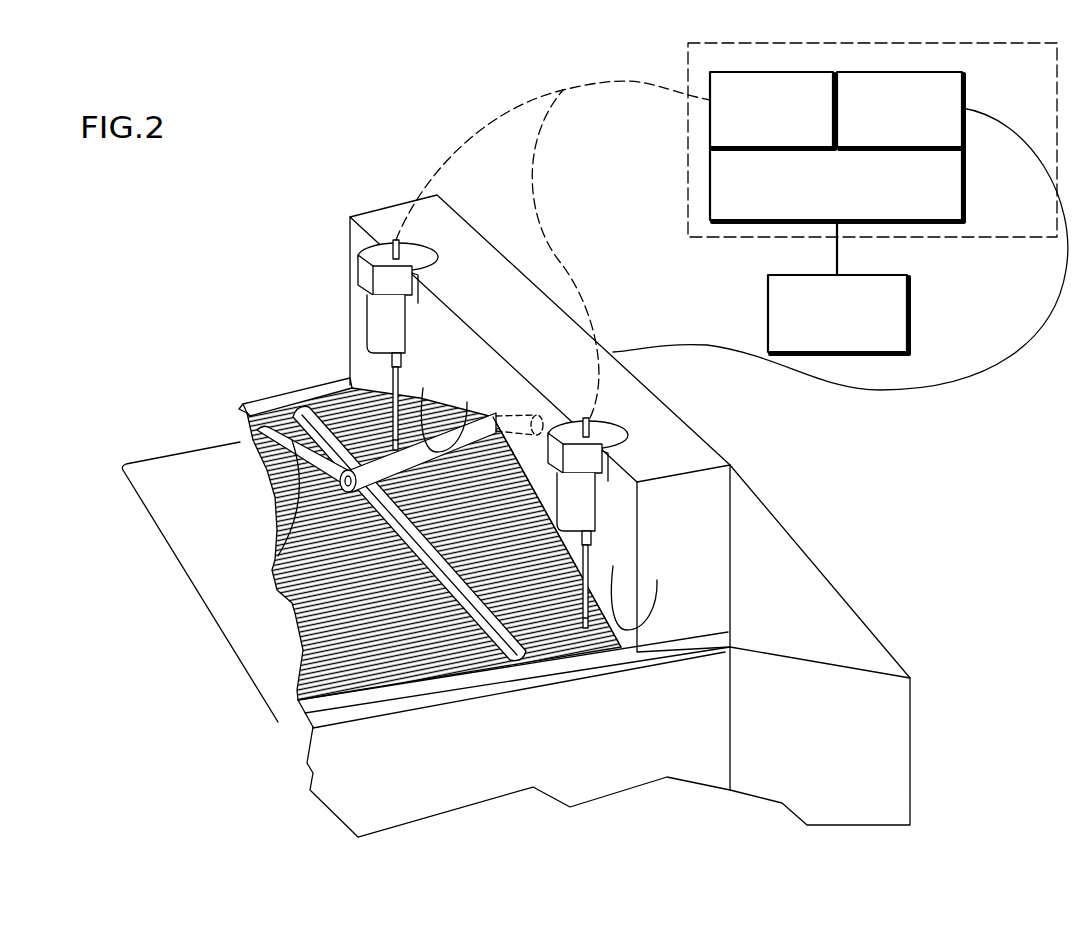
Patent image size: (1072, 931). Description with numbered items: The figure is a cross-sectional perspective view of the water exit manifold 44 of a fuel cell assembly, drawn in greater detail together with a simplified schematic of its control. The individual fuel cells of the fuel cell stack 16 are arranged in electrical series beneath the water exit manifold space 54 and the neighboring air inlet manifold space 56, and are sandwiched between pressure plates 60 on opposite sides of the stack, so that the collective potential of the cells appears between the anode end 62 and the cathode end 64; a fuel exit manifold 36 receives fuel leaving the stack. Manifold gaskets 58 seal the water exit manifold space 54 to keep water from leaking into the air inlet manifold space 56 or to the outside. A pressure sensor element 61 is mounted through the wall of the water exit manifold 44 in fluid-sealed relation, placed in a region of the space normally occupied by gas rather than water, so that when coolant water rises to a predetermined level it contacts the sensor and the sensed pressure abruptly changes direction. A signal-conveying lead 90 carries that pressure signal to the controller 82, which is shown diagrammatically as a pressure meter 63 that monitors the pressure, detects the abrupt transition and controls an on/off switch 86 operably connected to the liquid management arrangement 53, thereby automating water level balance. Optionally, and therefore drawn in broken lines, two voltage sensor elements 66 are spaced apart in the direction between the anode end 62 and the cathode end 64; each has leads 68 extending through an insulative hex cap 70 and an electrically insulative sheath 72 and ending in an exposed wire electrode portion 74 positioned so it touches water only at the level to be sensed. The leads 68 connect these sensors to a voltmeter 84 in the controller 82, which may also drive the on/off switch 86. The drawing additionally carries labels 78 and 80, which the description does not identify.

The fuel cell stack 16 is at (192, 595).
The fuel exit manifold 36 is at (808, 608).
The water exit manifold 44 is at (710, 482).
The liquid management arrangement 53 is at (862, 275).
The water exit manifold space 54 is at (332, 393).
The air inlet manifold space 56 is at (300, 505).
The manifold gaskets 58 is at (357, 425).
The pressure plates 60 is at (535, 682).
The pressure sensor element 61 is at (278, 556).
The anode end 62 is at (296, 702).
The pressure meter 63 is at (897, 72).
The cathode end 64 is at (250, 428).
The voltage sensor elements 66 is at (418, 257).
The leads 68 is at (467, 137).
The insulative hex cap 70 is at (382, 255).
The electrically insulative sheath 72 is at (393, 378).
The exposed wire electrode portion 74 is at (420, 398).
The gap 78 is at (637, 645).
The rod 80 is at (462, 428).
The controller 82 is at (795, 42).
The voltmeter 84 is at (762, 72).
The on/off switch 86 is at (962, 195).
The signal-conveying lead 90 is at (1037, 325).